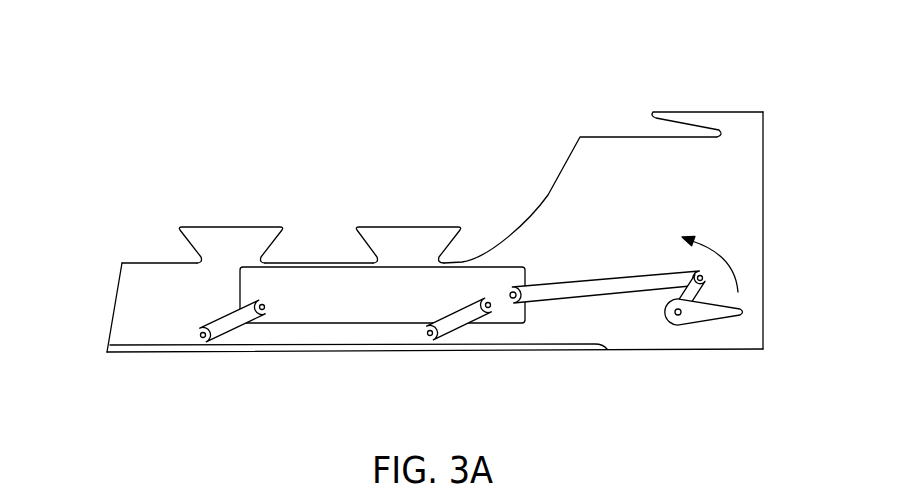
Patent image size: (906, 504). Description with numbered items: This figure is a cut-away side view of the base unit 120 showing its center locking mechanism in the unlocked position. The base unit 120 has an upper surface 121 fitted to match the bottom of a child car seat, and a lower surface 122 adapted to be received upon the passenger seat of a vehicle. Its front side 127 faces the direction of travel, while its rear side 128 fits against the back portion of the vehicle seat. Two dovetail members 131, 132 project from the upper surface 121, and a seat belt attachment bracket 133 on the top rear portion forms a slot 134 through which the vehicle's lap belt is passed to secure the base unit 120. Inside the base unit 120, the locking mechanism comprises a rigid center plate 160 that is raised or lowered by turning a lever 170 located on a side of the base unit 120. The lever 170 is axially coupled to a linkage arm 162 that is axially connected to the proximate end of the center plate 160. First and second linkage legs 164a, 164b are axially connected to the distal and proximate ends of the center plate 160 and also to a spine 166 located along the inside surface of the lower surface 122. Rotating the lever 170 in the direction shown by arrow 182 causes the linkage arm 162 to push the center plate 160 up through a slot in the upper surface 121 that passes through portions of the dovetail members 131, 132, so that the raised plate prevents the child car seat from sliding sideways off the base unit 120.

The base unit 120 is at (368, 93).
The upper surface 121 is at (317, 260).
The lower surface 122 is at (642, 352).
The front side 127 is at (113, 305).
The rear side 128 is at (765, 215).
The dovetail member 131 is at (232, 237).
The dovetail member 132 is at (408, 233).
The seat belt attachment bracket 133 is at (663, 110).
The slot 134 is at (655, 128).
The center plate 160 is at (525, 265).
The linkage arm 162 is at (632, 273).
The first linkage leg 164a is at (230, 335).
The second linkage leg 164b is at (440, 333).
The spine 166 is at (200, 335).
The lever 170 is at (723, 318).
The arrow 182 is at (725, 252).